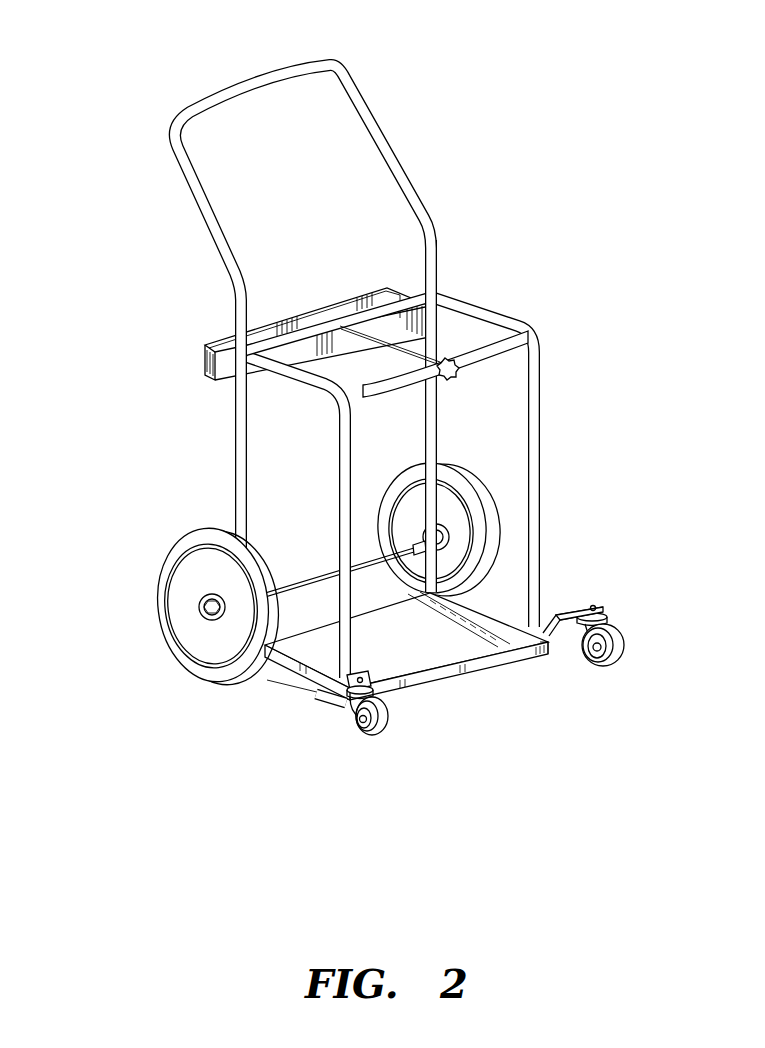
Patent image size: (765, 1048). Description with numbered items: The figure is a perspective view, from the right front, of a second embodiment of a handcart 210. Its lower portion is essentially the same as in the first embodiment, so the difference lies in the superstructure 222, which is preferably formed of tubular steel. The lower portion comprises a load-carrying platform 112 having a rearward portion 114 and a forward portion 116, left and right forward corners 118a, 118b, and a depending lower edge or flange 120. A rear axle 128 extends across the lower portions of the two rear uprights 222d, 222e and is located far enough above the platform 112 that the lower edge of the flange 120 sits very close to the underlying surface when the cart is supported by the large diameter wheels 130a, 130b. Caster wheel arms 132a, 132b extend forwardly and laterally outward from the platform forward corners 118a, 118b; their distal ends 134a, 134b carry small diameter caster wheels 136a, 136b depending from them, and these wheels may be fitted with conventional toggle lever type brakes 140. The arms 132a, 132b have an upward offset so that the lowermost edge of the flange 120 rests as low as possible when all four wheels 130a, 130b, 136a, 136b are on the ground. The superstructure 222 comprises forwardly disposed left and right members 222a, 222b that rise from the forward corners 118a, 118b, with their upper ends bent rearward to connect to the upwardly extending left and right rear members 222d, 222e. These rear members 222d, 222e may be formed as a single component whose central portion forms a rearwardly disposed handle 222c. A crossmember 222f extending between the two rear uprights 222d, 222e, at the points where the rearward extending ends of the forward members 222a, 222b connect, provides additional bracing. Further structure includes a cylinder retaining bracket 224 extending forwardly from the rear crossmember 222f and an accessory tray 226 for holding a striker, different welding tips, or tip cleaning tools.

The handcart 210 is at (64, 773).
The load-carrying platform 112 is at (406, 640).
The rearward portion 114 is at (307, 588).
The forward portion 116 is at (407, 693).
The left forward corner 118a is at (584, 671).
The right forward corner 118b is at (307, 748).
The depending lower edge or flange 120 is at (364, 703).
The rear axle 128 is at (324, 556).
The large diameter wheel 130a is at (433, 502).
The large diameter wheel 130b is at (166, 606).
The caster wheel arm 132a is at (575, 572).
The caster wheel arm 132b is at (309, 706).
The distal end 134a is at (624, 598).
The distal end 134b is at (427, 727).
The small diameter caster wheel 136a is at (660, 658).
The small diameter caster wheel 136b is at (392, 758).
The toggle lever type brake 140 is at (497, 710).
The superstructure 222 is at (619, 403).
The left forward member 222a is at (540, 462).
The right forward member 222b is at (296, 517).
The handle 222c is at (303, 152).
The left rear member 222d is at (475, 416).
The right rear member 222e is at (183, 472).
The crossmember 222f is at (336, 279).
The cylinder retaining bracket 224 is at (441, 318).
The accessory tray 226 is at (317, 307).